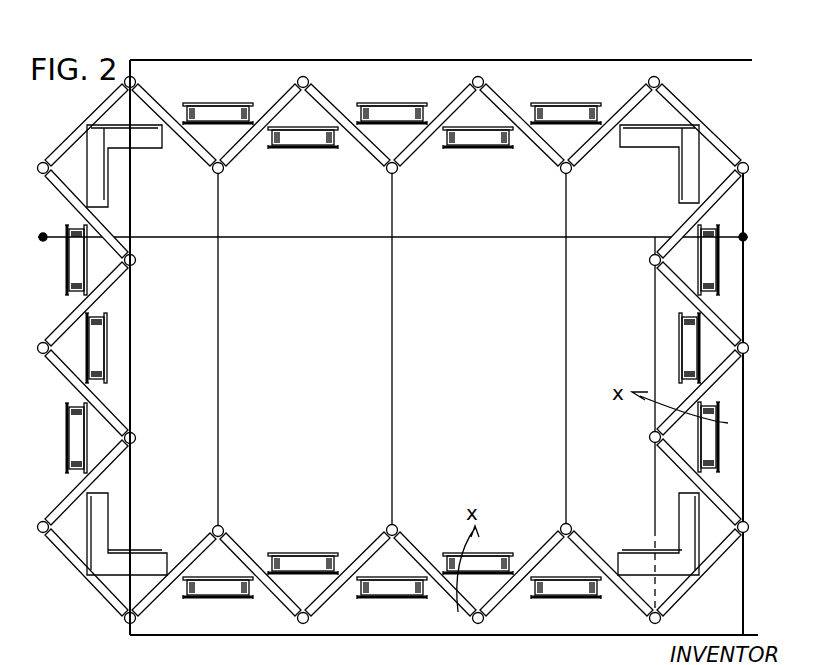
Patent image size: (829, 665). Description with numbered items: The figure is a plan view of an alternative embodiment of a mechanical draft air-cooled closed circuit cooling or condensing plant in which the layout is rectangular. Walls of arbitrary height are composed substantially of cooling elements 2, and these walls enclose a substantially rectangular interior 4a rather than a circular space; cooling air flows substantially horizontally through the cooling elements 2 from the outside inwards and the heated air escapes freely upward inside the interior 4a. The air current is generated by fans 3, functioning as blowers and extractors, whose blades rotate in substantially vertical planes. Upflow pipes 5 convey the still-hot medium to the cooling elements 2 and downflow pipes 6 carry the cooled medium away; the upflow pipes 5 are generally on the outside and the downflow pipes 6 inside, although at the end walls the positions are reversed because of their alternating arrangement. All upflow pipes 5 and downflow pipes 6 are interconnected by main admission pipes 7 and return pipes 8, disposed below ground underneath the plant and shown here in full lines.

The cooling elements 2 is at (512, 598).
The fans 3 is at (318, 565).
The rectangular interior 4a is at (271, 533).
The upflow pipes 5 is at (485, 82).
The downflow pipes 6 is at (224, 173).
The main admission pipes 7 is at (233, 59).
The return pipes 8 is at (35, 237).